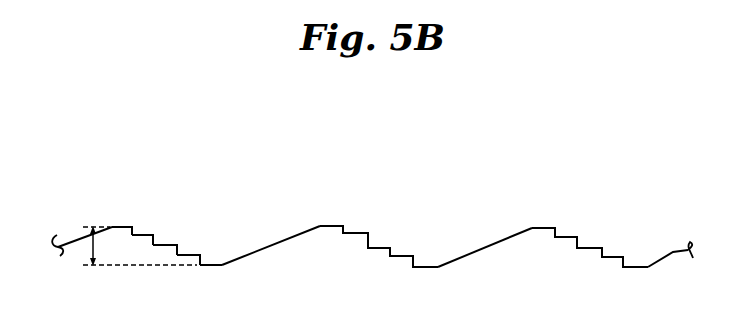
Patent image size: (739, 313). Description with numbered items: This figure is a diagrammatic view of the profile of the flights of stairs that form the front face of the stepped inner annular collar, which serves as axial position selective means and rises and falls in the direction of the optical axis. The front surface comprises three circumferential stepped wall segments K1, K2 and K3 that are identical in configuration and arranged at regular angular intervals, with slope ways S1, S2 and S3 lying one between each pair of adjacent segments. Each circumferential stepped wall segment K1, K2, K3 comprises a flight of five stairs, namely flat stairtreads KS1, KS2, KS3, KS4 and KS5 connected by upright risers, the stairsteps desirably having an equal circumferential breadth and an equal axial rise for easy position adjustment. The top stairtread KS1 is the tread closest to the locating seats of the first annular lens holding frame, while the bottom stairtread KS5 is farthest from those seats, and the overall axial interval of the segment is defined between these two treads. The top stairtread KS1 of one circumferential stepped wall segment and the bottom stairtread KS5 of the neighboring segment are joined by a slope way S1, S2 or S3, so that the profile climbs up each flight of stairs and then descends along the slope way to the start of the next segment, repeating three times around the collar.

The slope way S1 is at (70, 233).
The slope way S2 is at (287, 242).
The slope way S3 is at (490, 243).
The circumferential stepped wall segment K1 is at (248, 160).
The circumferential stepped wall segment K2 is at (462, 162).
The circumferential stepped wall segment K3 is at (670, 162).
The top stairtread KS1 is at (117, 226).
The stairtread KS2 is at (140, 233).
The stairtread KS3 is at (164, 244).
The stairtread KS4 is at (193, 254).
The bottom stairtread KS5 is at (213, 264).